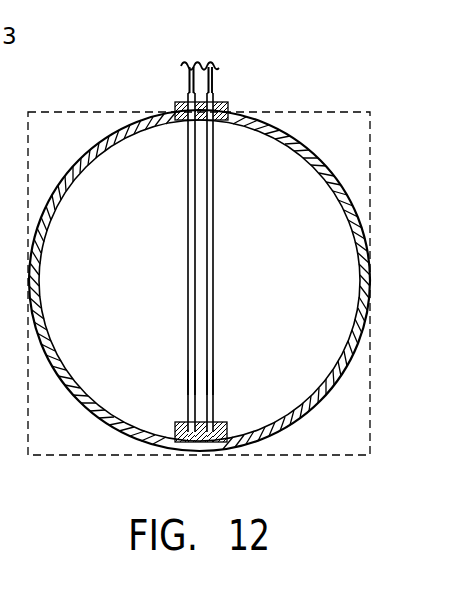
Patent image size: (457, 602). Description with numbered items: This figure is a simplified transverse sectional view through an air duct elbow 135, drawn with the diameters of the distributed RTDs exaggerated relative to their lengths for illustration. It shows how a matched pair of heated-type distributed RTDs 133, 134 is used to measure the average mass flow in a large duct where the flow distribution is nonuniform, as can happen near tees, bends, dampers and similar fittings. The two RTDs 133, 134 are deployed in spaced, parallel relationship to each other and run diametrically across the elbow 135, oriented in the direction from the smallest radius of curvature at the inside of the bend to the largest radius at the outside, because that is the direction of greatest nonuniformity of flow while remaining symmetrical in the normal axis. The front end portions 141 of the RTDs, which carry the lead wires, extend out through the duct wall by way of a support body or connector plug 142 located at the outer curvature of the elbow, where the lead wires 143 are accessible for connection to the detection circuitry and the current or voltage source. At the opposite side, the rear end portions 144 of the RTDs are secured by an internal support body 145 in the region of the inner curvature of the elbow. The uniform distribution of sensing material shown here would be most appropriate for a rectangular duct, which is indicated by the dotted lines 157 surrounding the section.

The distributed RTD 133 is at (188, 243).
The distributed RTD 134 is at (213, 224).
The air duct elbow 135 is at (308, 150).
The front end portions 141 is at (188, 98).
The connector plug 142 is at (222, 121).
The lead wires 143 is at (214, 68).
The rear end portions 144 is at (188, 384).
The internal support body 145 is at (218, 452).
The dotted lines 157 is at (100, 108).